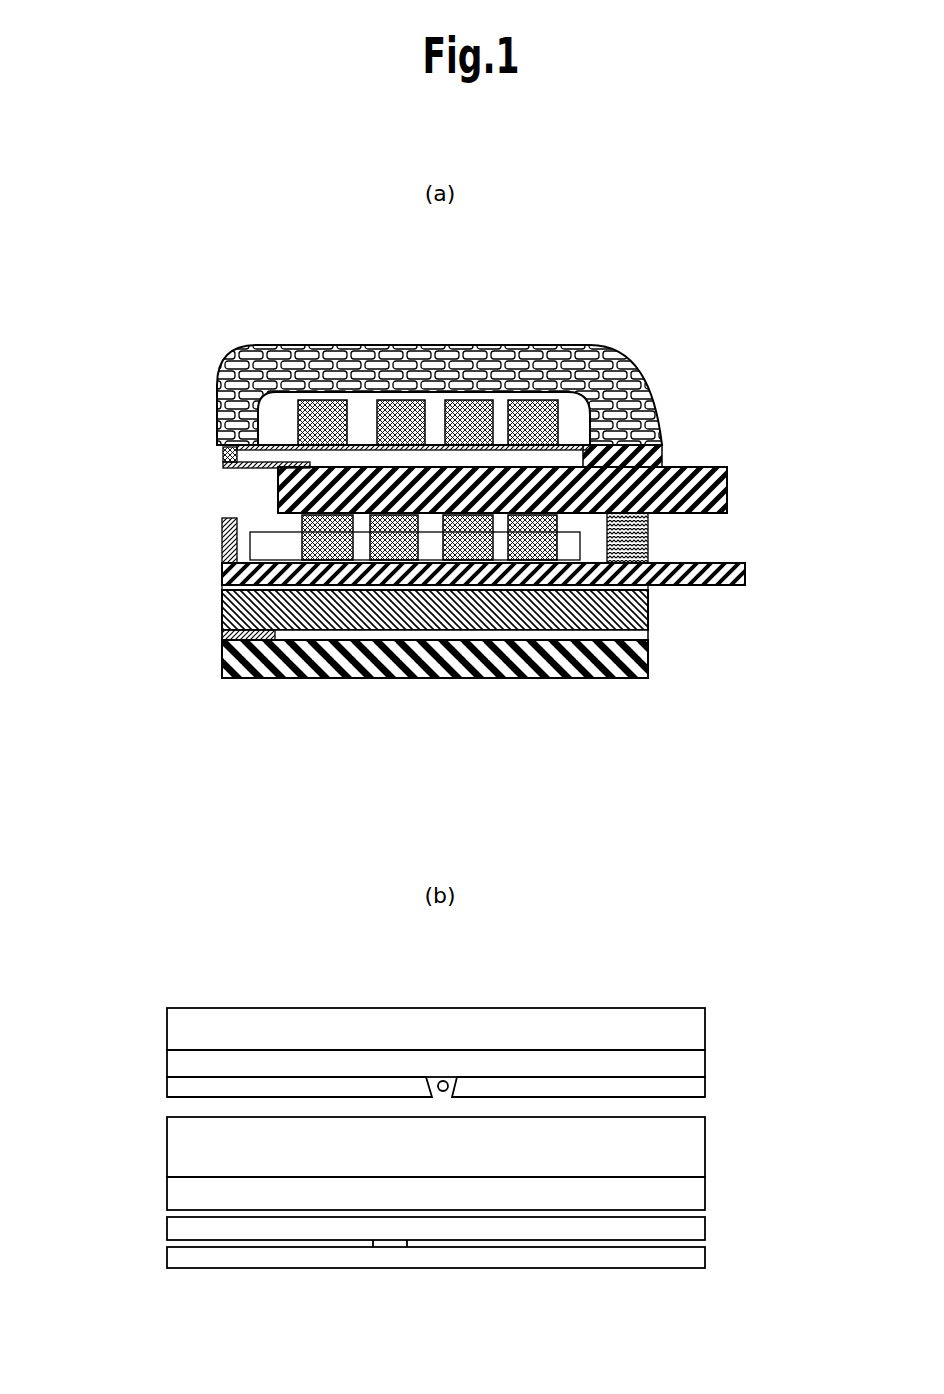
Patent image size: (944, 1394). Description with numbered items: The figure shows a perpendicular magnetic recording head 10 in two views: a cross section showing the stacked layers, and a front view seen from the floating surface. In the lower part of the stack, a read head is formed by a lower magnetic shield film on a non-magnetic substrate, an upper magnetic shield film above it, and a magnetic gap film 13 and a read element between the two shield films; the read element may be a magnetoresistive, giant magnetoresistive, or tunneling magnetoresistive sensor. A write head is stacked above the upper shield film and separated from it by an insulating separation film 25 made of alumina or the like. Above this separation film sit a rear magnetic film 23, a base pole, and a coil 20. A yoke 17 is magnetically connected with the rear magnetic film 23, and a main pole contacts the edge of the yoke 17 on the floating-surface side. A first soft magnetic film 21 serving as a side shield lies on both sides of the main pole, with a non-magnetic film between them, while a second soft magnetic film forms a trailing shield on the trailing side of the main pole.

The perpendicular magnetic recording head 10 is at (182, 310).
The magnetic gap film 13 is at (650, 633).
The yoke 17 is at (727, 482).
The coil 20 is at (402, 530).
The first soft magnetic film 21 is at (705, 1088).
The rear magnetic film 23 is at (652, 538).
The insulating separation film 25 is at (222, 590).